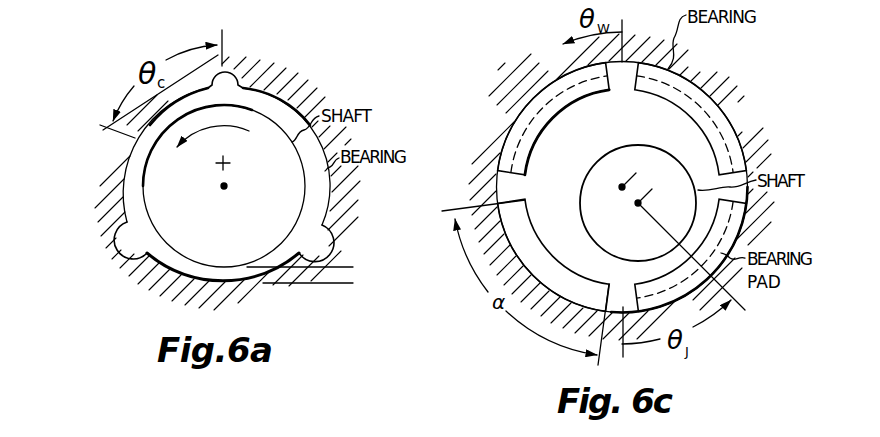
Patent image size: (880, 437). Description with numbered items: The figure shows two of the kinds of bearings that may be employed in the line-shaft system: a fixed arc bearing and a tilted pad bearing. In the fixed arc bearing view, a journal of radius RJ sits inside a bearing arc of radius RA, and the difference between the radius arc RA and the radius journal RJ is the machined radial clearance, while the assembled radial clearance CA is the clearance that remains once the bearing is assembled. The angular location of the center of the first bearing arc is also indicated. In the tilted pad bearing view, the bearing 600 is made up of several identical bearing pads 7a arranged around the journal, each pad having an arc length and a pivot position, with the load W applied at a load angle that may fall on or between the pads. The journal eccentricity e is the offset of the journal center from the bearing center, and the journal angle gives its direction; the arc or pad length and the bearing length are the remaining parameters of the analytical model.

In FIG. 6C, the tilting pad journal bearing 600 is at (627, 180).
In FIG. 6C, the bearing pad 7a is at (720, 87).
In FIG. 6A, the radius arc RA is at (223, 163).
In FIG. 6A, the radius journal RJ is at (224, 186).
In FIG. 6A, the assembled radial clearance CA is at (345, 267).
In FIG. 6C, the journal eccentricity e is at (649, 196).
In FIG. 6C, the load W is at (606, 148).